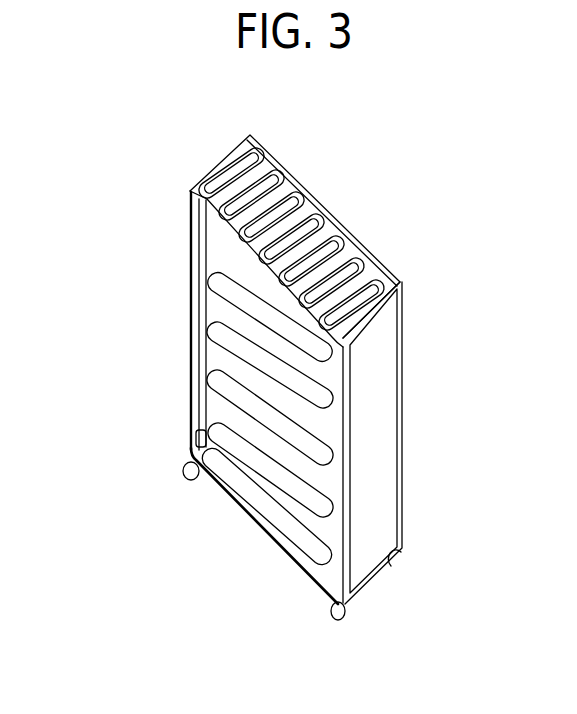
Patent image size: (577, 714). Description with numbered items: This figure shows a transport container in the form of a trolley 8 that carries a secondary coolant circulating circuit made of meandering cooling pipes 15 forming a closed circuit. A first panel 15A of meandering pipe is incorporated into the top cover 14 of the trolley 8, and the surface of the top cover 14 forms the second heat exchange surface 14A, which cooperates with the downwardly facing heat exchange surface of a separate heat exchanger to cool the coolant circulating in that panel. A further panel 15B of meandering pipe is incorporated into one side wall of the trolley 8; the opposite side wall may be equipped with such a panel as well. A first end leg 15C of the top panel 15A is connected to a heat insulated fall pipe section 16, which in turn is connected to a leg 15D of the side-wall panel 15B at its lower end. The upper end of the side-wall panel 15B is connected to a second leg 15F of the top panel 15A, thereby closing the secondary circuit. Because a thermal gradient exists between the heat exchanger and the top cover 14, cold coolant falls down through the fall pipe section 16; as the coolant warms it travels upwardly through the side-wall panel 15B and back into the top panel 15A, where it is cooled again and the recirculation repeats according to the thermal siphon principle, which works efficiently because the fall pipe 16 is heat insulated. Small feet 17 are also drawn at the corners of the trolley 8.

The trolley 8 is at (181, 295).
The top cover 14 is at (247, 137).
The second heat exchange surface 14A is at (325, 238).
The meandering cooling pipes 15 is at (298, 170).
The first panel of meandering pipe 15A is at (370, 273).
The further panel of meandering pipe 15B is at (332, 403).
The first end leg 15C is at (200, 207).
The leg of meandering pipe panel 15D is at (265, 517).
The second leg 15F is at (363, 315).
The heat insulated fall pipe section 16 is at (186, 433).
The feet 17 is at (191, 480).